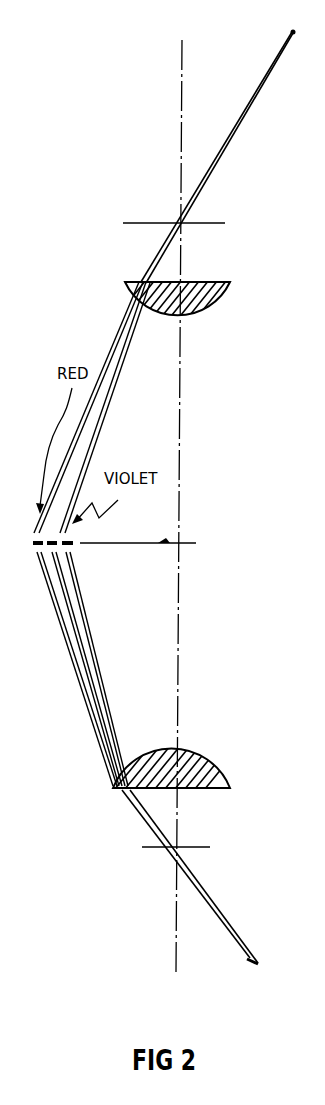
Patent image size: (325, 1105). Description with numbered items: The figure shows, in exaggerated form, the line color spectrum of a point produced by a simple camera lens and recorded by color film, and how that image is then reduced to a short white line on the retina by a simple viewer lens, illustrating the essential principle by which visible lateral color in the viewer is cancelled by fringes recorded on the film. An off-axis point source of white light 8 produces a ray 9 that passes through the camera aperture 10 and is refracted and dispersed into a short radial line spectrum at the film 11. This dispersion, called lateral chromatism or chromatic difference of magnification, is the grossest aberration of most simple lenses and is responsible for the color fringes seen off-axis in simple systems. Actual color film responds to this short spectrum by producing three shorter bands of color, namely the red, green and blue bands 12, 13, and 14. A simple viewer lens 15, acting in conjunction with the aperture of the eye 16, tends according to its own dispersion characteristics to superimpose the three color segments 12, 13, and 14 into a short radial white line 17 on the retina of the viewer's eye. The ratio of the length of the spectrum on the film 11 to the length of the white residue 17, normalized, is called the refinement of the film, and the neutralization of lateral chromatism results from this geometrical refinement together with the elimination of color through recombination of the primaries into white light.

The off-axis point source of white light 8 is at (275, 33).
The ray 9 is at (240, 97).
The camera aperture 10 is at (167, 212).
The film 11 is at (153, 543).
The red color band 12 is at (32, 560).
The green color band 13 is at (62, 553).
The blue color band 14 is at (85, 553).
The viewer lens 15 is at (181, 767).
The aperture of the eye 16 is at (196, 852).
The white line 17 is at (228, 960).